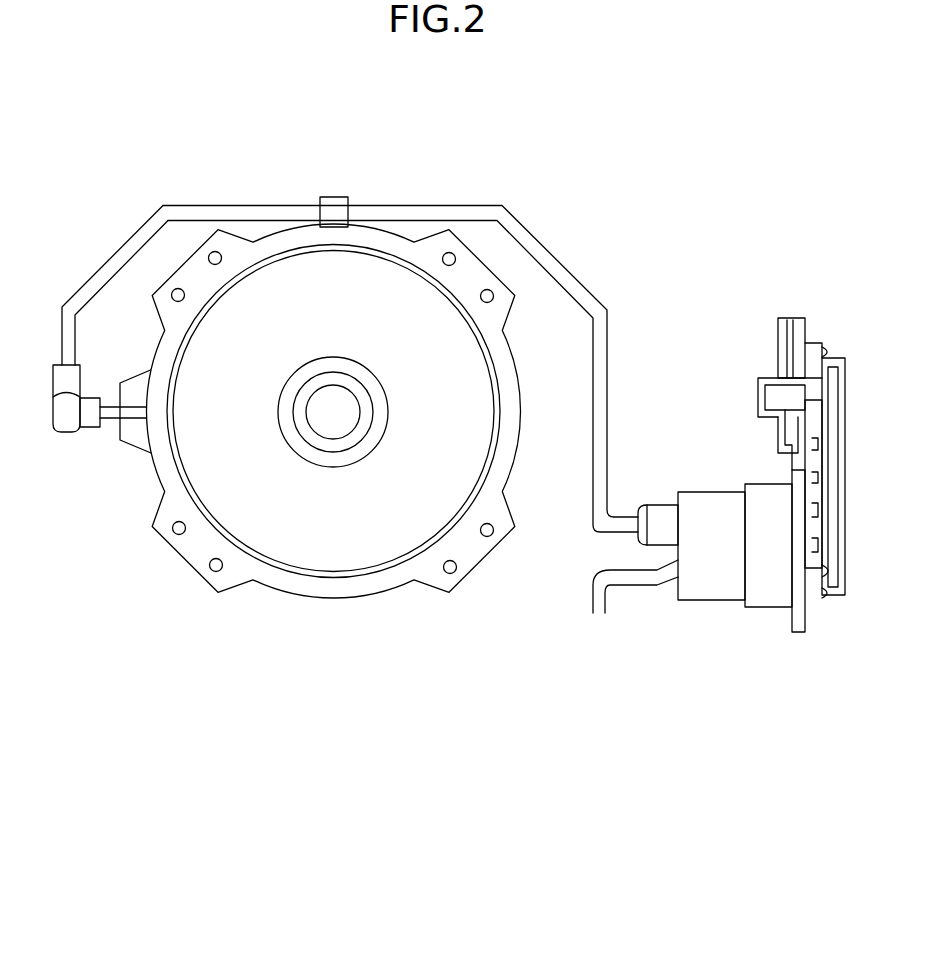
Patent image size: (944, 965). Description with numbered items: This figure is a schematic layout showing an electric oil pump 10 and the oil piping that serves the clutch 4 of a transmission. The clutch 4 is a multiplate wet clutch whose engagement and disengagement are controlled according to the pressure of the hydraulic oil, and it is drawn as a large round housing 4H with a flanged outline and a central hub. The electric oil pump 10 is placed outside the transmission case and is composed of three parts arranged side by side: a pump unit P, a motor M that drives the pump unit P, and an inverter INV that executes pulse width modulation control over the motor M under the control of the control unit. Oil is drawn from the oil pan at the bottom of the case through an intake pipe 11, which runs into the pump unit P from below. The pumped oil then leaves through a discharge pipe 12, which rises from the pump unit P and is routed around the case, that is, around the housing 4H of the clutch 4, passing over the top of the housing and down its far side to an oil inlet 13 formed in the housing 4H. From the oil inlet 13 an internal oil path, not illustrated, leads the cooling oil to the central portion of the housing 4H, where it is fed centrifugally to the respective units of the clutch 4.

The clutch 4 is at (332, 515).
The housing 4H is at (158, 486).
The electric oil pump 10 is at (735, 728).
The intake pipe 11 is at (638, 587).
The discharge pipe 12 is at (250, 205).
The oil inlet 13 is at (127, 413).
The pump unit P is at (711, 600).
The motor M is at (772, 608).
The inverter INV is at (838, 357).